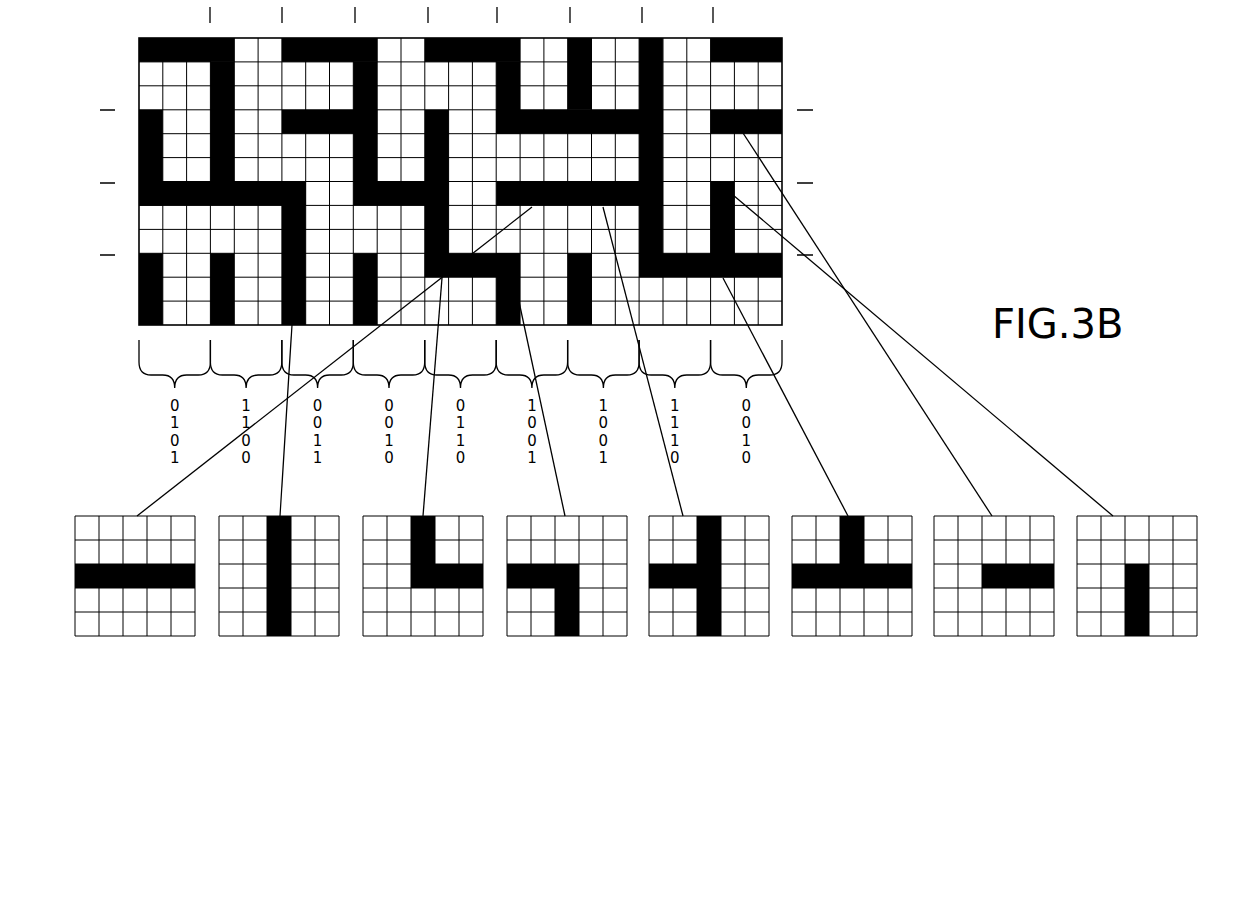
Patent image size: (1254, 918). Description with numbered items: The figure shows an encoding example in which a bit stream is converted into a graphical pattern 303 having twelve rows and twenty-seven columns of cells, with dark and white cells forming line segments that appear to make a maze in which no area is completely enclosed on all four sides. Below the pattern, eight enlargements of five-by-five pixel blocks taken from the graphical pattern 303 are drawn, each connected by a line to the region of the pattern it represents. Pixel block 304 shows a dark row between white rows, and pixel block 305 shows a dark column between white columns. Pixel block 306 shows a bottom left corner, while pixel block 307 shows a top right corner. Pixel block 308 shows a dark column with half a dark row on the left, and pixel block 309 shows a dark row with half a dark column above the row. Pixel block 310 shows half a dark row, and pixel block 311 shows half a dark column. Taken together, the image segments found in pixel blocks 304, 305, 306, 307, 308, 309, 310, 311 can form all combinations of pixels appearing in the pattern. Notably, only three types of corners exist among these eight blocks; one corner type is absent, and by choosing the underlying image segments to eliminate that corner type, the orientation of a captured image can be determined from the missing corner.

The graphical pattern 303 is at (868, 37).
The pixel block 304 is at (159, 637).
The pixel block 305 is at (303, 637).
The pixel block 306 is at (447, 637).
The pixel block 307 is at (591, 637).
The pixel block 308 is at (733, 637).
The pixel block 309 is at (876, 637).
The pixel block 310 is at (1018, 637).
The pixel block 311 is at (1138, 637).